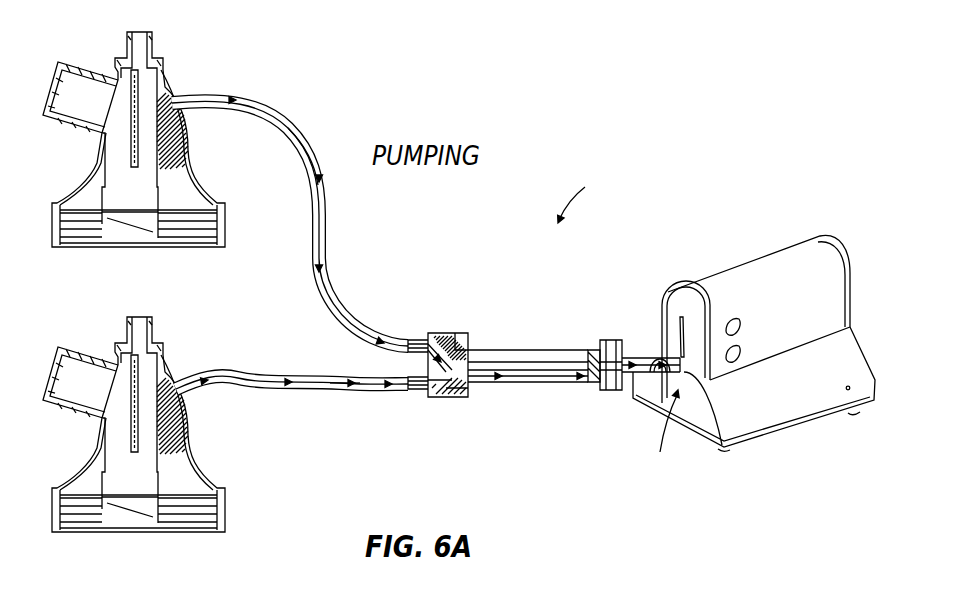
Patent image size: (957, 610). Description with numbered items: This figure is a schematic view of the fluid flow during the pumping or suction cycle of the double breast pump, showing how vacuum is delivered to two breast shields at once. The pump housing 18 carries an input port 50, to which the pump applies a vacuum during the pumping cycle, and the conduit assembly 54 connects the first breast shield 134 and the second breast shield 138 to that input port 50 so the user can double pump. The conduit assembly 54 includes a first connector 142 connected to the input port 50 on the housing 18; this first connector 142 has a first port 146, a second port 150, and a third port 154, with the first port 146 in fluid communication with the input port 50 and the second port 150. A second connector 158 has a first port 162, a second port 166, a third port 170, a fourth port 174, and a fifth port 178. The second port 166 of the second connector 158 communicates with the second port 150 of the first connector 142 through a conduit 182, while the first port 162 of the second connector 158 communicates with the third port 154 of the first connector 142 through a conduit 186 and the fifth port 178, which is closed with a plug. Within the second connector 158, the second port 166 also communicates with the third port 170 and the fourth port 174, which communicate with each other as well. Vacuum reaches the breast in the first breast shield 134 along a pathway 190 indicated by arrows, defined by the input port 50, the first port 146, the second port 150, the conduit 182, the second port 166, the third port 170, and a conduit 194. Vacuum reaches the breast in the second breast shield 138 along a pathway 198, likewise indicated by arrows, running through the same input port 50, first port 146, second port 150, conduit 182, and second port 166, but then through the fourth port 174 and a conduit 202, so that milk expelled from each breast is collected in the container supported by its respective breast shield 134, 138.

The housing 18 is at (782, 255).
The input port 50 is at (678, 393).
The conduit assembly 54 is at (559, 220).
The first breast shield 134 is at (187, 420).
The second breast shield 138 is at (190, 140).
The first connector 142 is at (625, 355).
The first port 146 is at (643, 377).
The second port 150 is at (598, 390).
The third port 154 is at (598, 345).
The second connector 158 is at (455, 401).
The first port 162 is at (472, 351).
The second port 166 is at (474, 399).
The third port 170 is at (416, 392).
The fourth port 174 is at (413, 340).
The fifth port 178 is at (442, 333).
The conduit 182 is at (526, 384).
The conduit 186 is at (516, 350).
The pathway 190 is at (345, 389).
The conduit 194 is at (252, 373).
The pathway 198 is at (322, 243).
The conduit 202 is at (306, 168).